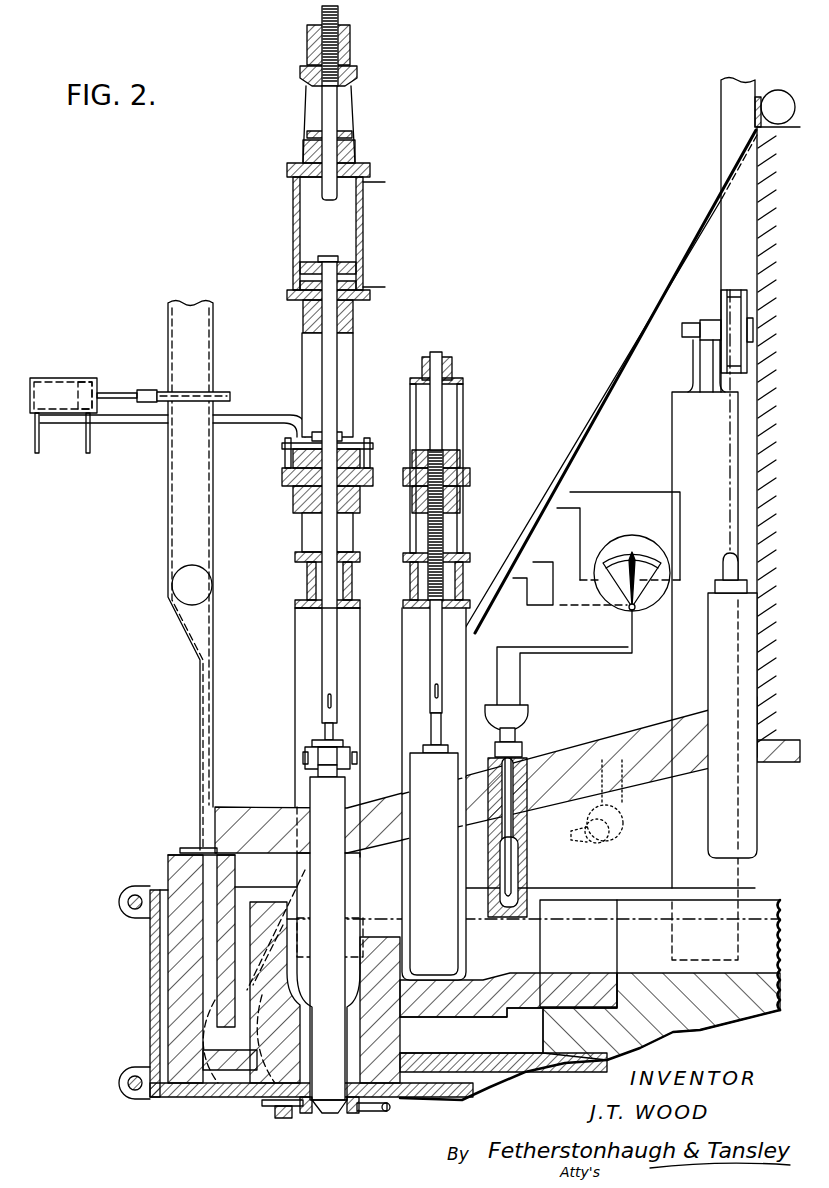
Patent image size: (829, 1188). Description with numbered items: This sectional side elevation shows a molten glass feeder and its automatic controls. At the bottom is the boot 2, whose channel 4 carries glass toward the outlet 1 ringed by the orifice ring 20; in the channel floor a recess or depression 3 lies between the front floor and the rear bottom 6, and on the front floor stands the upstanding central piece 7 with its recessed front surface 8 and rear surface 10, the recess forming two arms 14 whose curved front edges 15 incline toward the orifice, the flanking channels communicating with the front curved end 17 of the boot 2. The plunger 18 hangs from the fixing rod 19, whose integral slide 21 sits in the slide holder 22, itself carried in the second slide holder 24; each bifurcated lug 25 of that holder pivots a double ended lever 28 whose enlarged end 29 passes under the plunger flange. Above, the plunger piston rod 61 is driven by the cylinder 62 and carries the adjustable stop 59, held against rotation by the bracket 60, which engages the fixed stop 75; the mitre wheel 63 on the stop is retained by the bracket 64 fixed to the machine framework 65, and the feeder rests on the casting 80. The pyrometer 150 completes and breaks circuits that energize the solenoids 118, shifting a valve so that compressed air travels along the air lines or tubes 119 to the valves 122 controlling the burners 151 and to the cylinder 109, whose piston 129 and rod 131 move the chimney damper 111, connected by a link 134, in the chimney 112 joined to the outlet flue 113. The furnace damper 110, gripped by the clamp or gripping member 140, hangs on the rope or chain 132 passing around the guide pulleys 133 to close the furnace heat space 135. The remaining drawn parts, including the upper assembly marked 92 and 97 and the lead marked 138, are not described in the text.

The outlet 1 is at (400, 1037).
The boot 2 is at (491, 1010).
The recess or depression 3 is at (480, 978).
The channel 4 is at (533, 947).
The bottom at rear end 6 is at (593, 975).
The upstanding central piece 7 is at (403, 917).
The front surface 8 is at (355, 945).
The rear surface 10 is at (408, 947).
The arms 14 is at (360, 927).
The front edges 15 is at (328, 976).
The front curved end 17 is at (292, 905).
The plunger 18 is at (329, 1085).
The fixing rod 19 is at (325, 730).
The orifice ring 20 is at (352, 1113).
The slide 21 is at (343, 745).
The slide holder 22 is at (345, 738).
The second slide holder 24 is at (325, 745).
The bifurcated lug 25 is at (318, 766).
The double ended lever 28 is at (335, 765).
The enlarged end 29 is at (327, 932).
The adjustable stop 59 is at (343, 535).
The bracket 60 is at (295, 448).
The plunger piston rod 61 is at (333, 365).
The cylinder 62 is at (363, 236).
The mitre wheel 63 is at (360, 462).
The bracket 64 is at (291, 482).
The machine framework 65 is at (302, 356).
The fixed stop 75 is at (342, 432).
The casting 80 is at (150, 1020).
The nut 92 is at (357, 78).
The rod 97 is at (330, 188).
The cylinder 109 is at (36, 378).
The furnace damper 110 is at (710, 675).
The chimney damper 111 is at (195, 403).
The chimney 112 is at (180, 520).
The outlet flue 113 is at (205, 935).
The solenoid 118 is at (584, 547).
The air lines or tubes 119 is at (36, 455).
The valves 122 is at (565, 803).
The piston 129 is at (78, 388).
The rod 131 is at (128, 390).
The rope or chain 132 is at (737, 446).
The guide pulley 133 is at (721, 303).
The link 134 is at (150, 403).
The furnace heat space 135 is at (641, 449).
The lead 138 is at (87, 455).
The clamp or gripping member 140 is at (722, 572).
The pyrometer 150 is at (620, 610).
The burners 151 is at (624, 838).